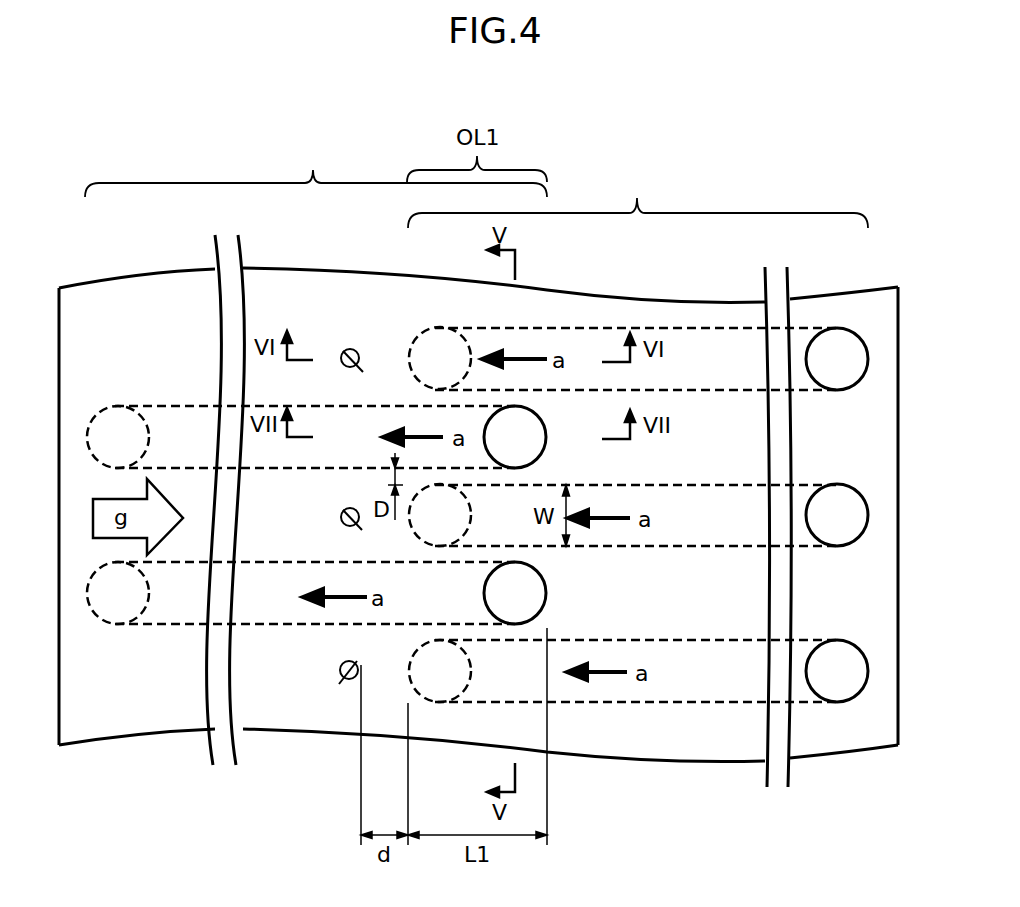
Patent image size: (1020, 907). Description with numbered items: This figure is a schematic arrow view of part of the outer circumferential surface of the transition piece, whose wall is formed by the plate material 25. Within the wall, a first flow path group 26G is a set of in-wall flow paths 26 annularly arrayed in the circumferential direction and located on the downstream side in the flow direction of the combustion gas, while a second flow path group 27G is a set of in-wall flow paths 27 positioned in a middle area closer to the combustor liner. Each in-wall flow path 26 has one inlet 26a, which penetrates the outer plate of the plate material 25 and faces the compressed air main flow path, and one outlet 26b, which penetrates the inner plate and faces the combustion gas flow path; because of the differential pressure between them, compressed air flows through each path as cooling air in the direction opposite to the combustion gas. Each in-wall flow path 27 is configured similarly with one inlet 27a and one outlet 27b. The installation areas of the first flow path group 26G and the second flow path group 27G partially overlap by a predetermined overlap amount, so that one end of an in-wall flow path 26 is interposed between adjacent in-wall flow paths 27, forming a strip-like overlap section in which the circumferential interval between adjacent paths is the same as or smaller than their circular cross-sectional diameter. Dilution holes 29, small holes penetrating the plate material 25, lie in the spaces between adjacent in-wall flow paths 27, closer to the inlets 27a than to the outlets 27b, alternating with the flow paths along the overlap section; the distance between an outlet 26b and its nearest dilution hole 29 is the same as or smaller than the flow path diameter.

The plate material 25 is at (898, 438).
The in-wall flow path 26 is at (708, 390).
The inlet 26a is at (808, 374).
The outlet 26b is at (460, 345).
The first flow path group 26G is at (638, 196).
The in-wall flow path 27 is at (320, 468).
The inlet 27a is at (531, 463).
The outlet 27b is at (135, 462).
The second flow path group 27G is at (316, 167).
The dilution hole 29 is at (350, 533).